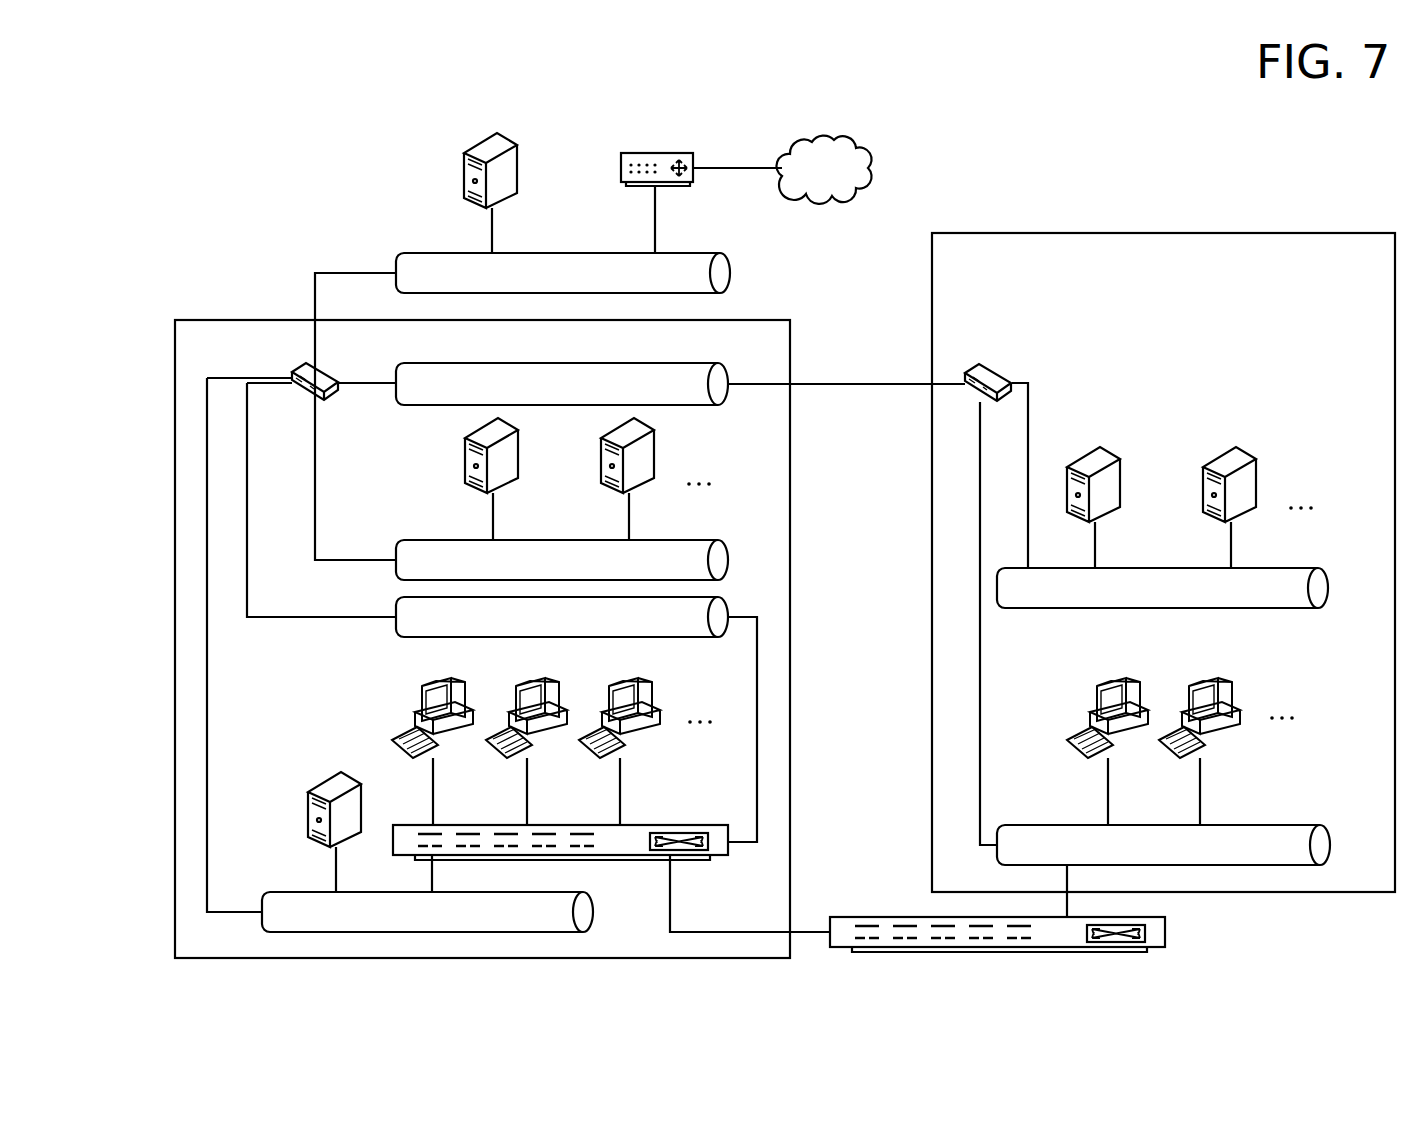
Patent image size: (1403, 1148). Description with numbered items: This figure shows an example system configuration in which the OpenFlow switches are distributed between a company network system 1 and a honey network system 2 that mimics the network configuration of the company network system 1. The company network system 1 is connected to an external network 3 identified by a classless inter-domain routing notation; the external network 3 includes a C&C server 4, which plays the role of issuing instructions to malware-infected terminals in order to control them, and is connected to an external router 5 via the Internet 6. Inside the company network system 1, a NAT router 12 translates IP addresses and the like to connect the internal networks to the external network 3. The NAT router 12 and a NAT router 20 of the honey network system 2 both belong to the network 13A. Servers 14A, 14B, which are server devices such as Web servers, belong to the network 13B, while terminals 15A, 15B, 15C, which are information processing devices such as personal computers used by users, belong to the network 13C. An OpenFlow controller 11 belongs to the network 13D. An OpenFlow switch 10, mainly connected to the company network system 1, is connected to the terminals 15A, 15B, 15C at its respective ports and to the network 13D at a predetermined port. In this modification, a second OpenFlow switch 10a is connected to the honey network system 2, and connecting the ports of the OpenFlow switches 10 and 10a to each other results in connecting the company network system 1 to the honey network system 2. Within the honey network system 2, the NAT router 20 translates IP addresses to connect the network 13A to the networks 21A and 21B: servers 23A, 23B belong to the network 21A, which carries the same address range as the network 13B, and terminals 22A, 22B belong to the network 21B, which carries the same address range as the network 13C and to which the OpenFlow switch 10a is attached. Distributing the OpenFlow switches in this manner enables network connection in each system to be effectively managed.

The company network system 1 is at (790, 333).
The honey network system 2 is at (1160, 233).
The external network 3 is at (703, 233).
The C&C server 4 is at (520, 152).
The external router 5 is at (655, 153).
The Internet 6 is at (870, 172).
The OpenFlow switch 10 is at (641, 860).
The OpenFlow switch 10a is at (1163, 930).
The OpenFlow controller 11 is at (308, 798).
The NAT router 12 is at (333, 343).
The network 13A is at (690, 363).
The network 13B is at (690, 540).
The network 13C is at (437, 637).
The network 13D is at (280, 892).
The server 14A is at (465, 447).
The server 14B is at (657, 447).
The terminal 15A is at (422, 700).
The terminal 15B is at (516, 680).
The terminal 15C is at (653, 740).
The NAT router 20 is at (1002, 365).
The network 21A is at (1290, 568).
The network 21B is at (1290, 825).
The terminal 22A is at (1112, 678).
The terminal 22B is at (1204, 678).
The server 23A is at (1120, 470).
The server 23B is at (1257, 470).